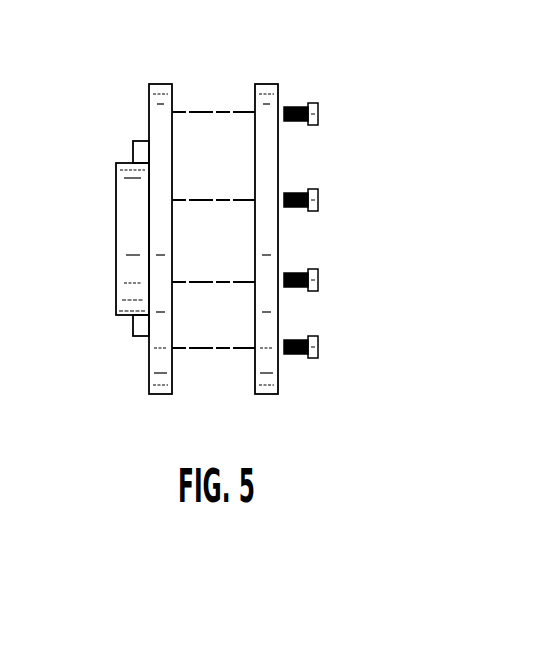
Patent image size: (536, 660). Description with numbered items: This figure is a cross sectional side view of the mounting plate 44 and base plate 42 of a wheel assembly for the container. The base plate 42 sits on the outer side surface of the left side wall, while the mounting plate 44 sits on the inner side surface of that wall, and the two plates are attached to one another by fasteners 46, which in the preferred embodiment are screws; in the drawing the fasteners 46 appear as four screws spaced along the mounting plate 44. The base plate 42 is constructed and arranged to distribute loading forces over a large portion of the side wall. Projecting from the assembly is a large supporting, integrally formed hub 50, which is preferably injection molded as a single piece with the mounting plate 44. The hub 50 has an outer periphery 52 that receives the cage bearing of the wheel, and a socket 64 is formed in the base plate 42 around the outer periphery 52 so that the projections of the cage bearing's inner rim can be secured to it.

The base plate 42 is at (162, 84).
The mounting plate 44 is at (267, 84).
The fasteners 46 is at (311, 103).
The hub 50 is at (116, 173).
The outer periphery 52 is at (128, 163).
The socket 64 is at (143, 141).